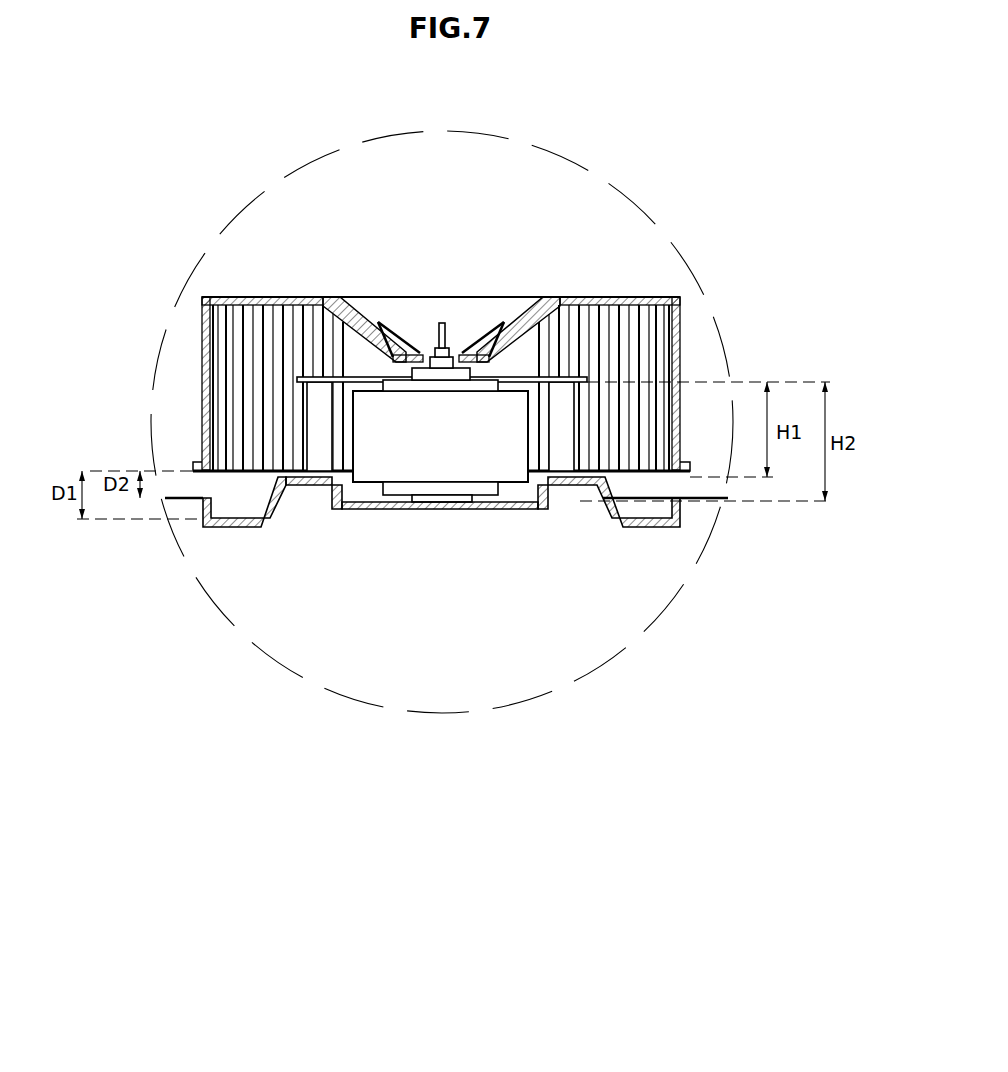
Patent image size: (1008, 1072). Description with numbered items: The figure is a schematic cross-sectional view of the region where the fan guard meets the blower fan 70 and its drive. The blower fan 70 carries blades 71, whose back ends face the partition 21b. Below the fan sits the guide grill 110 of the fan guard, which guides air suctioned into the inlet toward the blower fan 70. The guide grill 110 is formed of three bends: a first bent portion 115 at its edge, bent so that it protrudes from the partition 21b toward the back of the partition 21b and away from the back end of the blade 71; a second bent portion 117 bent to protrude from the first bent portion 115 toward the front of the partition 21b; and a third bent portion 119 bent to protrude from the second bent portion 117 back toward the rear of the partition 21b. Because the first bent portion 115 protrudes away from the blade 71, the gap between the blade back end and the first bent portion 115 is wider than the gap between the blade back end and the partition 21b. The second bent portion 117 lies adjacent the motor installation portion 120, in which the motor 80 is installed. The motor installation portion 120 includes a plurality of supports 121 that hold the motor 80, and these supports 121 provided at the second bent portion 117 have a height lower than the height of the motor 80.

The blower fan 70 is at (700, 329).
The blade 71 is at (232, 345).
The motor 80 is at (483, 400).
The motor installation portion 120 is at (335, 420).
The supports 121 is at (300, 423).
The guide grill 110 is at (441, 549).
The first bent portion 115 is at (240, 528).
The second bent portion 117 is at (303, 487).
The third bent portion 119 is at (440, 544).
The partition 21b is at (185, 500).